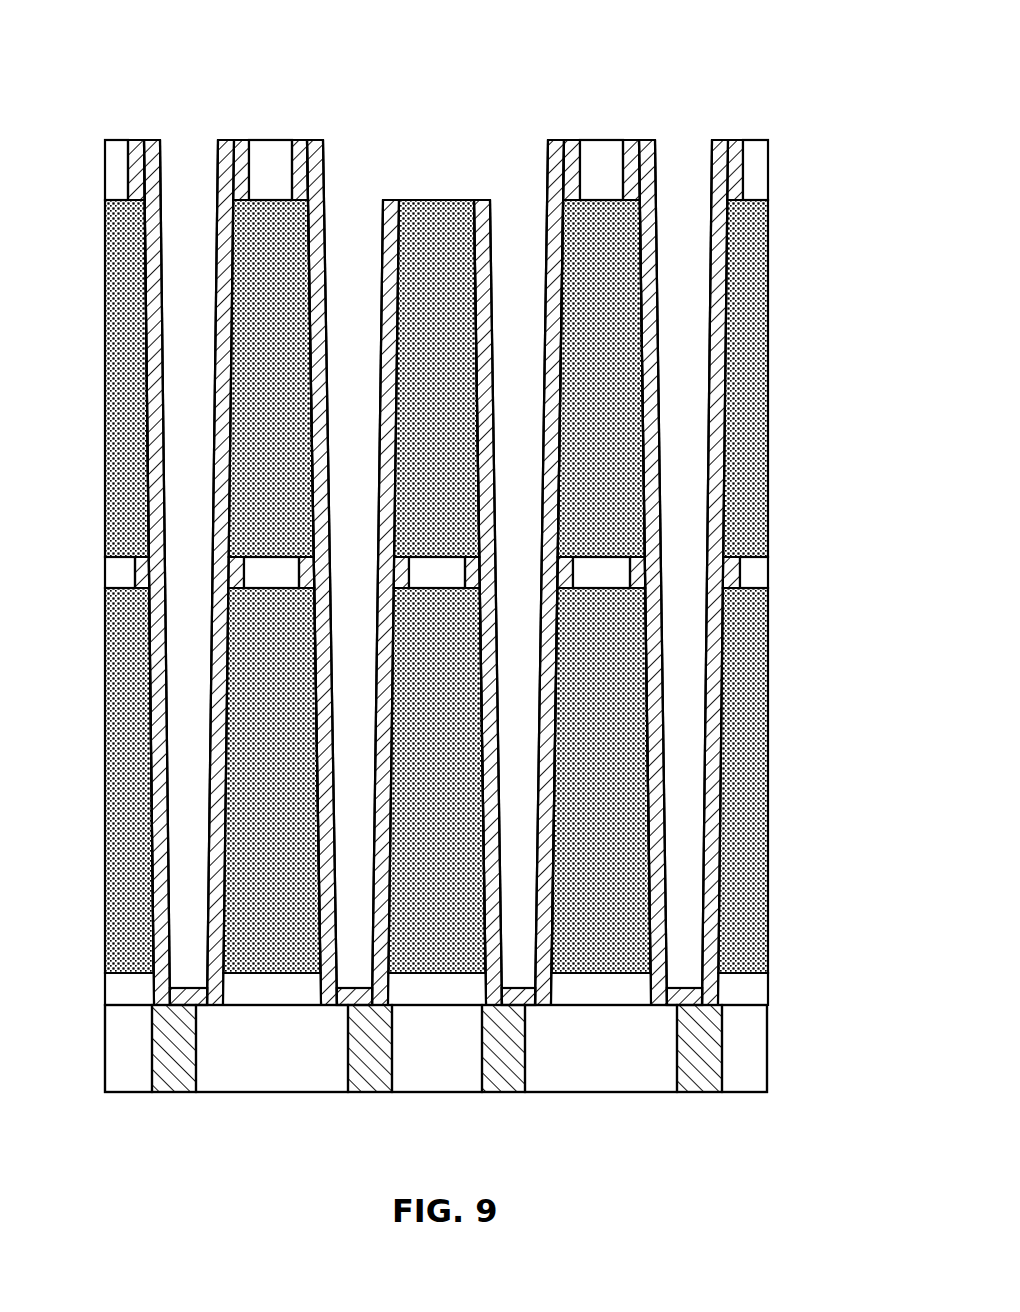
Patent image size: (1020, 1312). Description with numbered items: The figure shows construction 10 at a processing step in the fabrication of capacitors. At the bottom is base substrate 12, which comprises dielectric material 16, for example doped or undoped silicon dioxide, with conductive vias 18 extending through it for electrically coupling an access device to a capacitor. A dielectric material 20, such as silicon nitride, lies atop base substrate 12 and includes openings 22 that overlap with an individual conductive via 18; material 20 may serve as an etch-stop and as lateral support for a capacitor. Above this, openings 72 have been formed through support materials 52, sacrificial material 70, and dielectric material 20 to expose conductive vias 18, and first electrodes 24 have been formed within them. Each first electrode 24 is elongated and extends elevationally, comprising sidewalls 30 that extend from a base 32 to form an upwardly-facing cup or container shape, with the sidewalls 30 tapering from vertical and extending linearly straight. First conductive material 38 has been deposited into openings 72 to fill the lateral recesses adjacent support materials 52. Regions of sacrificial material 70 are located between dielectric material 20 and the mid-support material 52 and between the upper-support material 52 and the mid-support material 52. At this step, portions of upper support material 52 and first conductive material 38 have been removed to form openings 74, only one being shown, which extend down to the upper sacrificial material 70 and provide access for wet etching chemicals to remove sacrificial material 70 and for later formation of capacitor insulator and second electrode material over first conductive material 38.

The construction 10 is at (786, 74).
The base substrate 12 is at (483, 1048).
The dielectric material 16 is at (436, 1048).
The conductive vias 18 is at (437, 1048).
The dielectric material 20 is at (436, 962).
The openings 22 is at (495, 964).
The first electrodes 24 is at (448, 535).
The sidewalls 30 is at (423, 572).
The base 32 is at (436, 1022).
The first conductive material 38 is at (426, 572).
The support materials 52 is at (437, 343).
The sacrificial material 70 is at (436, 586).
The openings 72 is at (452, 534).
The openings 74 is at (436, 108).